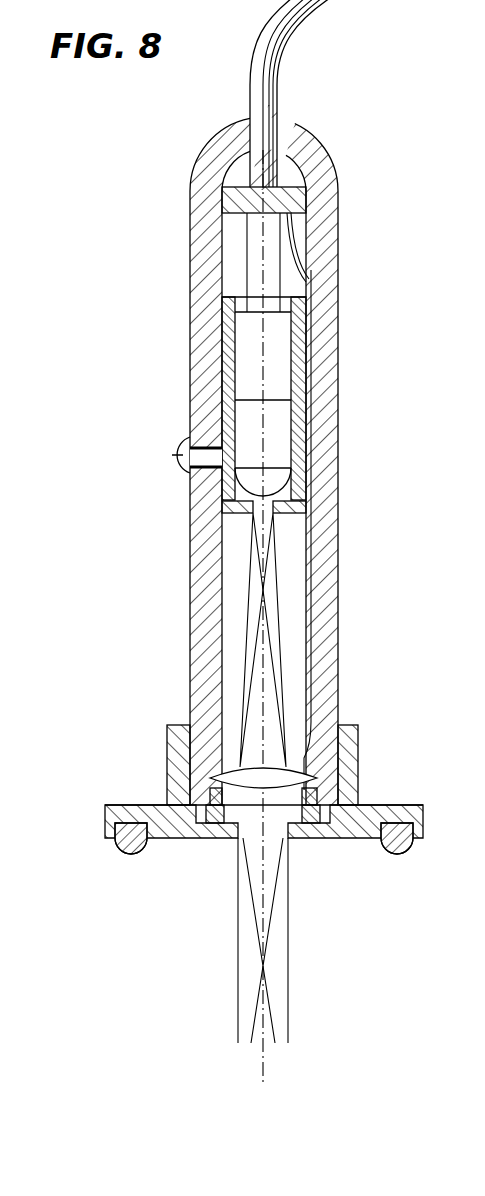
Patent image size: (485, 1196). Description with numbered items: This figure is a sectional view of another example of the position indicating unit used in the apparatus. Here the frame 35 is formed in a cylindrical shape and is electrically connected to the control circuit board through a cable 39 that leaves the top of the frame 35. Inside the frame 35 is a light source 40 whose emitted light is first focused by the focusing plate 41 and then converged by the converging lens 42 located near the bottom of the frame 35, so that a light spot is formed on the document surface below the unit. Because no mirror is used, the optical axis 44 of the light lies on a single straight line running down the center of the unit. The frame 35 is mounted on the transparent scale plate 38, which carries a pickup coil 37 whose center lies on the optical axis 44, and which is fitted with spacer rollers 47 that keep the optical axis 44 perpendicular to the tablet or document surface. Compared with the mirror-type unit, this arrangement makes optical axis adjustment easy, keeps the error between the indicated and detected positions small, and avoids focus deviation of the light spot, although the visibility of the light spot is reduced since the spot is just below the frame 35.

The frame 35 is at (333, 570).
The pickup coil 37 is at (312, 839).
The transparent scale plate 38 is at (348, 768).
The cable 39 is at (300, 12).
The light source 40 is at (282, 443).
The focusing plate 41 is at (294, 503).
The converging lens 42 is at (295, 763).
The optical axis 44 is at (262, 609).
The spacer rollers 47 is at (393, 842).